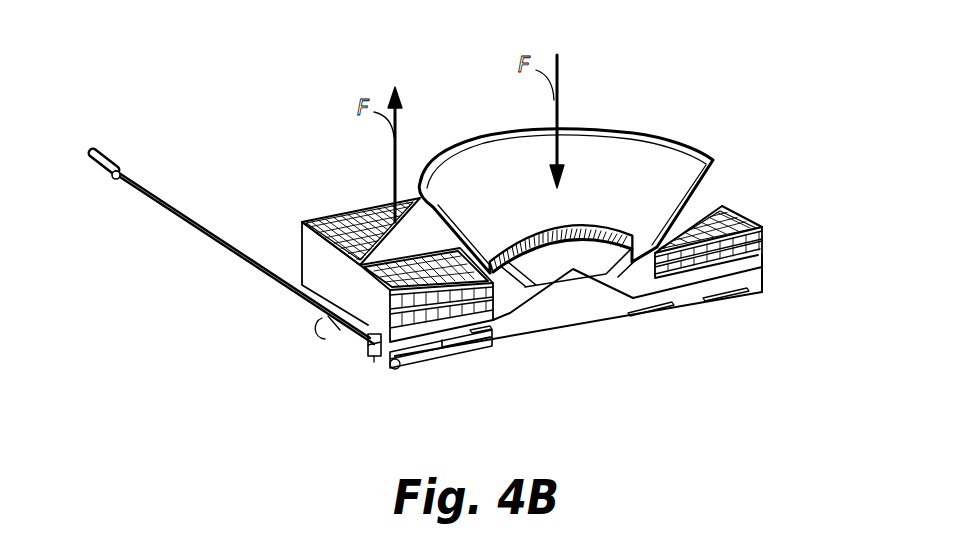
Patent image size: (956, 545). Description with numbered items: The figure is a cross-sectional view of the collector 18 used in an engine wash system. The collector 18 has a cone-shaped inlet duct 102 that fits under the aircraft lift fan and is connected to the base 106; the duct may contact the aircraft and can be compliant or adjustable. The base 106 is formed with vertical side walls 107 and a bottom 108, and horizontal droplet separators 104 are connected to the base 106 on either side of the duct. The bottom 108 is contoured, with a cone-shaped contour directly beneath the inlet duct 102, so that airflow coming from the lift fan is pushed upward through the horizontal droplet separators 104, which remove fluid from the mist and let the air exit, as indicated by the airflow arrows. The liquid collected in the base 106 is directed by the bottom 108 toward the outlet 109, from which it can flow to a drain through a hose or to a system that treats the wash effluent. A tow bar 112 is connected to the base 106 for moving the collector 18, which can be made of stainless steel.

The collector 18 is at (631, 70).
The inlet duct 102 is at (514, 148).
The horizontal droplet separators 104 is at (373, 278).
The base 106 is at (792, 280).
The vertical side walls 107 is at (350, 306).
The bottom 108 is at (612, 340).
The outlet 109 is at (398, 368).
The tow bar 112 is at (160, 197).